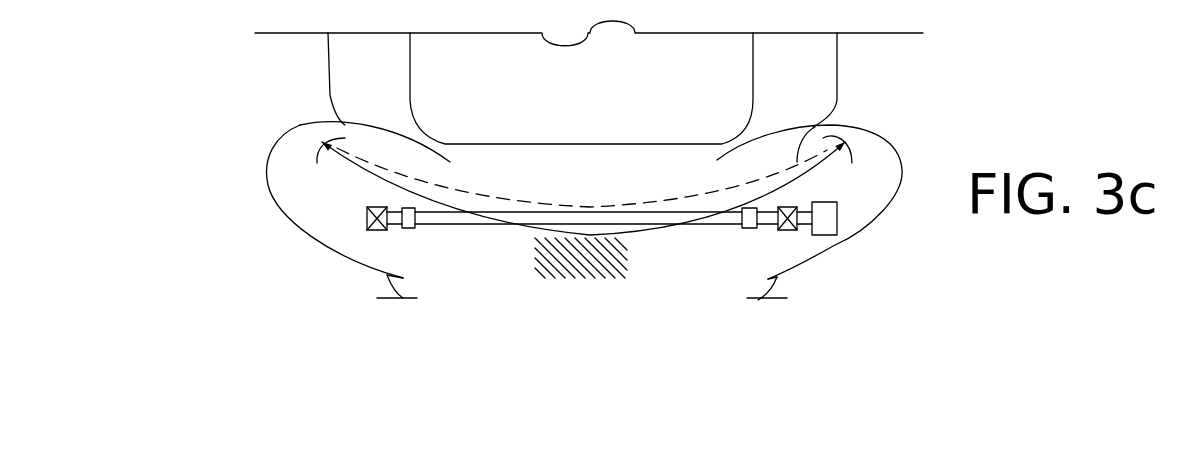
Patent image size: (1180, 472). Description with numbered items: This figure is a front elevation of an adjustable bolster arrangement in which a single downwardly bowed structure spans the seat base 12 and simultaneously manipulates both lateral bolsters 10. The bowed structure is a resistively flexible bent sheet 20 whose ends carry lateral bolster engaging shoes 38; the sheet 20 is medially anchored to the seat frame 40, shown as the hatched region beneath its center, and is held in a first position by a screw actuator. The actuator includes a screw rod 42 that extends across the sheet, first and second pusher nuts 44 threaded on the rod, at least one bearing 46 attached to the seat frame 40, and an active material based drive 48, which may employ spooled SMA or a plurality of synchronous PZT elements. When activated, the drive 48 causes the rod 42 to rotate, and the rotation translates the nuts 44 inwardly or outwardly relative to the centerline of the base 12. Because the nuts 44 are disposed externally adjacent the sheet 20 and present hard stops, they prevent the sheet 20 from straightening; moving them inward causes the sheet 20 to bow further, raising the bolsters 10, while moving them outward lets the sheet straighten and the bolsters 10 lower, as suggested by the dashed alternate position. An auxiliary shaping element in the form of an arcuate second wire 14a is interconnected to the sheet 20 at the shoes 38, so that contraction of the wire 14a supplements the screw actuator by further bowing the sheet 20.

The lateral bolster 10 is at (287, 88).
The seat base 12 is at (600, 100).
The auxiliary shaping element (second wire) 14a is at (813, 127).
The lateral bolster engaging shoe 38 is at (917, 140).
The bent sheet (bowed structure) 20 is at (675, 232).
The seat frame 40 is at (588, 276).
The screw rod 42 is at (430, 224).
The bearing 46 is at (367, 222).
The pusher nut 44 is at (748, 228).
The active material based drive 48 is at (837, 213).